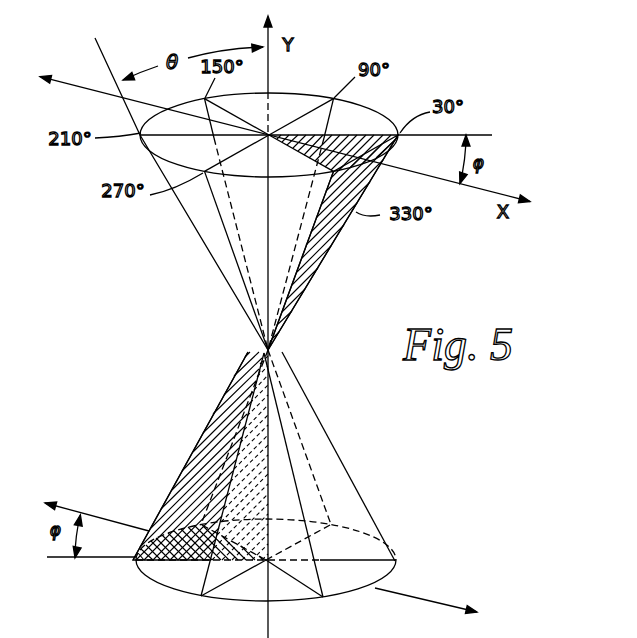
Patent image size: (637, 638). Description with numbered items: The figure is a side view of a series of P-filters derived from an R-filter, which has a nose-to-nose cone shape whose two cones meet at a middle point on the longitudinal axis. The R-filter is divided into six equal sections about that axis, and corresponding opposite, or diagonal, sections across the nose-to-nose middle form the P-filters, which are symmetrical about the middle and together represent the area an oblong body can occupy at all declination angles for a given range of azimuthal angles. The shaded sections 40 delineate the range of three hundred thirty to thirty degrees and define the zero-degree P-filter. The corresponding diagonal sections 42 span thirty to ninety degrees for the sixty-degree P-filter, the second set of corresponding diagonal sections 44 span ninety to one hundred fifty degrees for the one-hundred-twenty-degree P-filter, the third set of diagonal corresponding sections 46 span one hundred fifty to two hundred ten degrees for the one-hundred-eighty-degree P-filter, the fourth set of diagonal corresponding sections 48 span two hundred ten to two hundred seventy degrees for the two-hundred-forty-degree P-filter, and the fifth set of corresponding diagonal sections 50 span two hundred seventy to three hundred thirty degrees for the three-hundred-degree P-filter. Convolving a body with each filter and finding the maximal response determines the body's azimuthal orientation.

The shaded sections 40 is at (338, 243).
The corresponding diagonal sections 42 is at (360, 120).
The second set of corresponding diagonal sections 44 is at (292, 107).
The third set of diagonal corresponding sections 46 is at (153, 122).
The fourth set of diagonal corresponding sections 48 is at (190, 235).
The fifth set of corresponding diagonal sections 50 is at (257, 250).